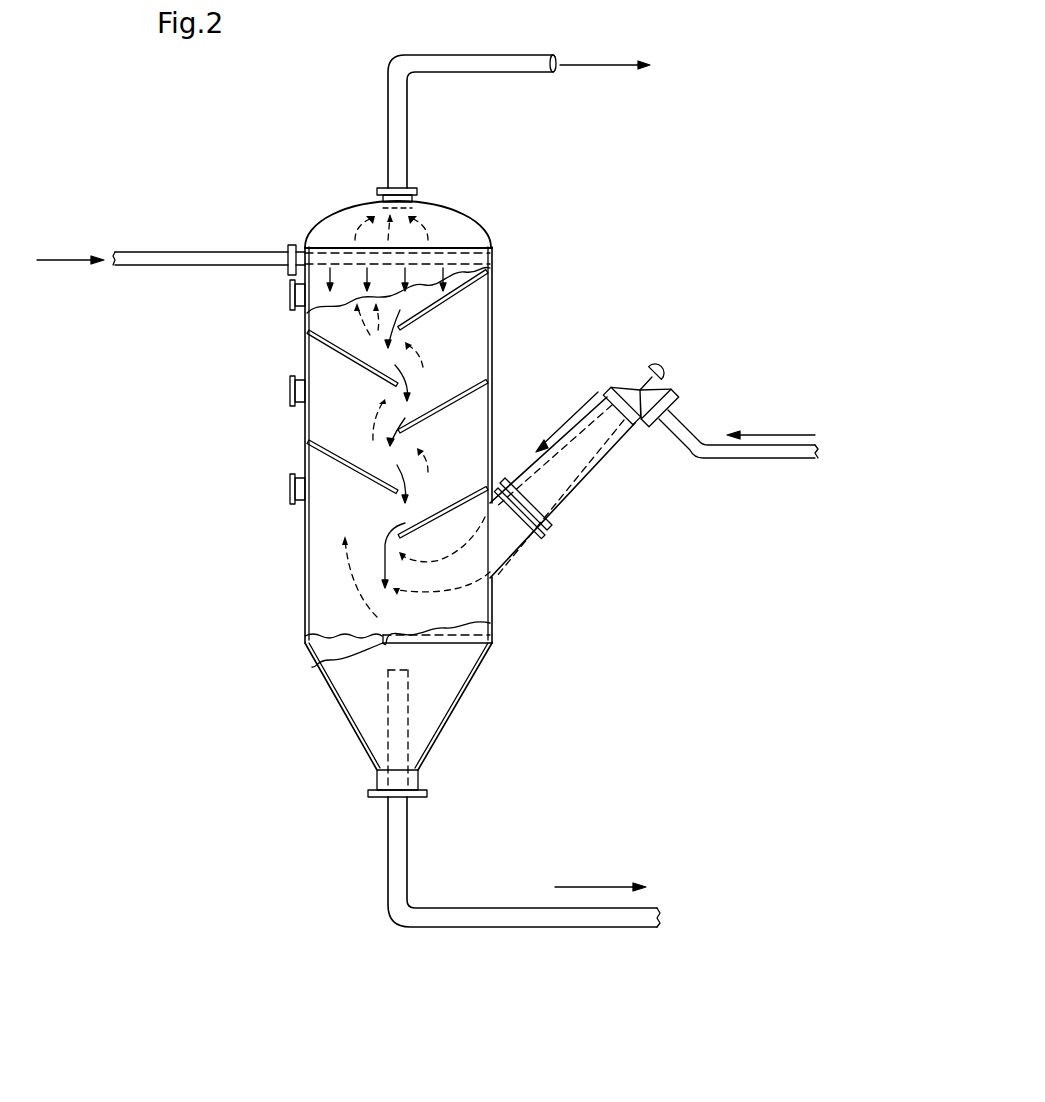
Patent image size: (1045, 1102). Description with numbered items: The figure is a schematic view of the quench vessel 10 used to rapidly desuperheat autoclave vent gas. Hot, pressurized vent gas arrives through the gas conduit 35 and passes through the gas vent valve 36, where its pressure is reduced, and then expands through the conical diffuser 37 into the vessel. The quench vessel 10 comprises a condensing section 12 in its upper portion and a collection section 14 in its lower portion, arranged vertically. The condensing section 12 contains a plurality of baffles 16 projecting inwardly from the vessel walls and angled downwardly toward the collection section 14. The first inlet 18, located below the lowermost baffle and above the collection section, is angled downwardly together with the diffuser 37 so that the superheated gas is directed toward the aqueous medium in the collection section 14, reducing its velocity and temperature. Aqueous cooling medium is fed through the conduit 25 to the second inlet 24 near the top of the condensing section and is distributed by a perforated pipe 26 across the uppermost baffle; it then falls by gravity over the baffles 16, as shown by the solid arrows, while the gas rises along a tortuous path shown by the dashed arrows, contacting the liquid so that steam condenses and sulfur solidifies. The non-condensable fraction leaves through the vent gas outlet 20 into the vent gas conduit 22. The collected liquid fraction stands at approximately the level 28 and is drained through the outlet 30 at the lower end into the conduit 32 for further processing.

The quench vessel 10 is at (379, 495).
The condensing section 12 is at (491, 362).
The collection section 14 is at (465, 690).
The baffles 16 is at (427, 312).
The first inlet 18 is at (492, 583).
The vent gas outlet 20 is at (420, 198).
The vent gas conduit 22 is at (470, 55).
The second inlet 24 is at (290, 245).
The conduit 25 is at (141, 252).
The perforated pipe 26 is at (480, 240).
The level of collected liquid fraction 28 is at (492, 637).
The outlet 30 is at (428, 792).
The conduit 32 is at (410, 838).
The gas conduit 35 is at (737, 458).
The gas vent valve 36 is at (661, 367).
The conical diffuser 37 is at (573, 460).